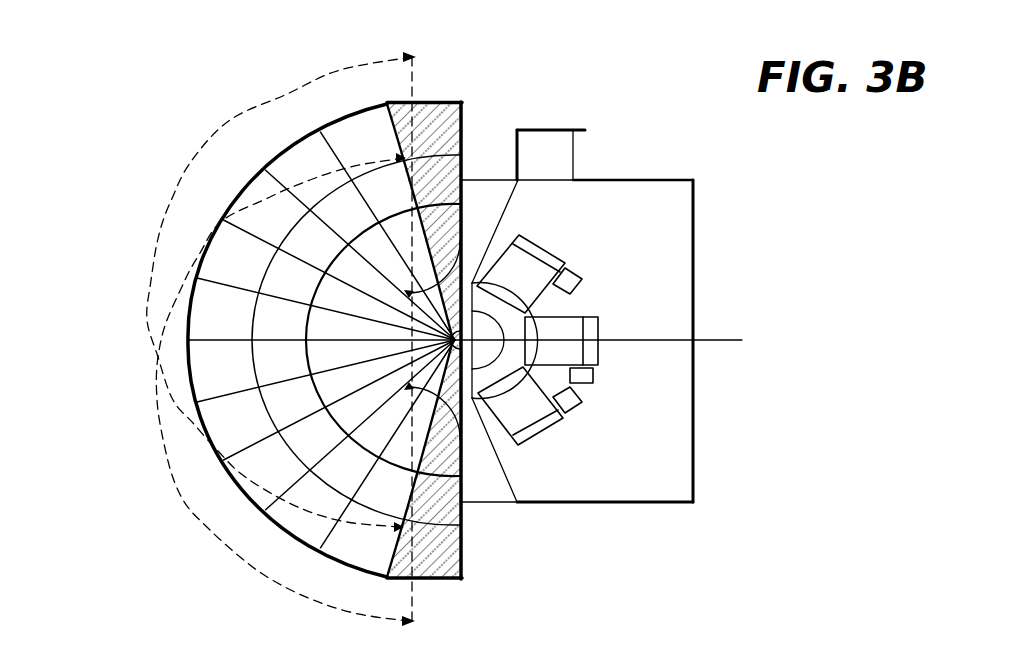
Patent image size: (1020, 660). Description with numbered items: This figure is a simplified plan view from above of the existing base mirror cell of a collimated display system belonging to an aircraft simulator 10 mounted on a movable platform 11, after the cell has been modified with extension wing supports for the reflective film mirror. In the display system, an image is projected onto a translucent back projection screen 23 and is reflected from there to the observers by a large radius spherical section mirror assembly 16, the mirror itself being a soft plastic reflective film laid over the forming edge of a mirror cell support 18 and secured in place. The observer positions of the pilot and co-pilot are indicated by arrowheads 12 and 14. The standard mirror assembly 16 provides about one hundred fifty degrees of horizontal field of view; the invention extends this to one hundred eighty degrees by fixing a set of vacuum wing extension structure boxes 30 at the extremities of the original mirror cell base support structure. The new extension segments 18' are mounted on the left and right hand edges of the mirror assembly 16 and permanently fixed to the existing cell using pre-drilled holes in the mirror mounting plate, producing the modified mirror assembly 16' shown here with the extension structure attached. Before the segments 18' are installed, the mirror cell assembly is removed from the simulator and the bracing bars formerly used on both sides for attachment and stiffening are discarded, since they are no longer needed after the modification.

The aircraft simulator 10 is at (125, 152).
The movable platform 11 is at (660, 178).
The pilot position arrowhead 12 is at (463, 523).
The co-pilot position arrowhead 14 is at (462, 265).
The mirror assembly 16 is at (262, 350).
The modified mirror assembly 16' is at (522, 322).
The mirror cell support 18 is at (280, 340).
The extension structure 18' is at (469, 329).
The translucent back projection screen 23 is at (314, 393).
The vacuum wing extension structure box 30 is at (427, 101).